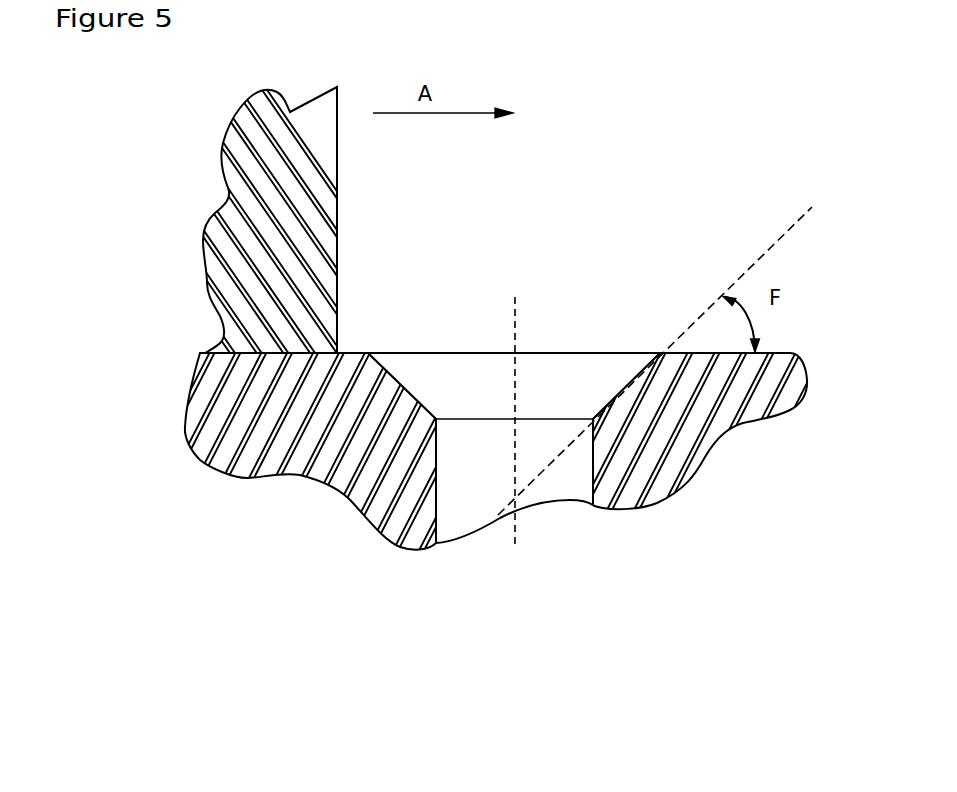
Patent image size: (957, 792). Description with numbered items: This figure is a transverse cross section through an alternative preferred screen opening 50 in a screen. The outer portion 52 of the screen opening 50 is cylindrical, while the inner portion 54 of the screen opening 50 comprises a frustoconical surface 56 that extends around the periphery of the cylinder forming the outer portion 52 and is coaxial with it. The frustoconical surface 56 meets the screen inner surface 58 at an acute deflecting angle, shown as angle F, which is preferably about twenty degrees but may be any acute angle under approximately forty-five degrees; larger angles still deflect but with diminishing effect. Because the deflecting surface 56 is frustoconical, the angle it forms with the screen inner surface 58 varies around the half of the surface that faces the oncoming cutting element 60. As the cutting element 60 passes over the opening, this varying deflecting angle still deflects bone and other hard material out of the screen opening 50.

The screen opening 50 is at (414, 314).
The outer portion 52 is at (486, 561).
The inner portion 54 is at (514, 335).
The frustoconical surface 56 is at (607, 395).
The screen inner surface 58 is at (777, 353).
The cutting element 60 is at (337, 300).